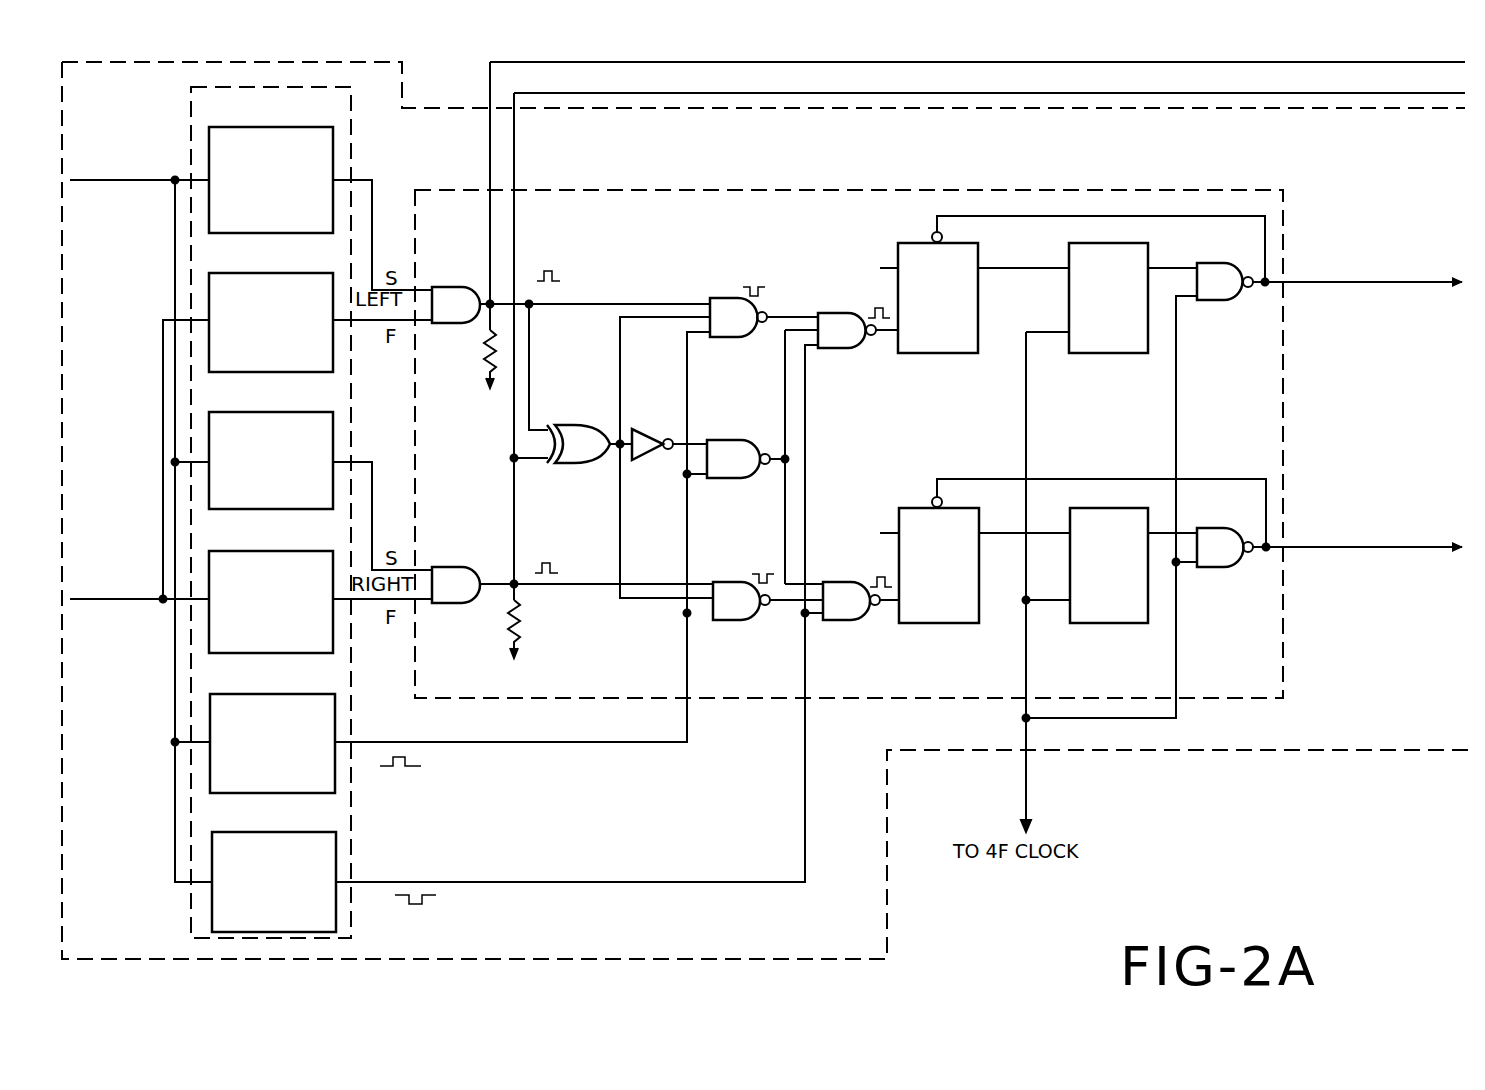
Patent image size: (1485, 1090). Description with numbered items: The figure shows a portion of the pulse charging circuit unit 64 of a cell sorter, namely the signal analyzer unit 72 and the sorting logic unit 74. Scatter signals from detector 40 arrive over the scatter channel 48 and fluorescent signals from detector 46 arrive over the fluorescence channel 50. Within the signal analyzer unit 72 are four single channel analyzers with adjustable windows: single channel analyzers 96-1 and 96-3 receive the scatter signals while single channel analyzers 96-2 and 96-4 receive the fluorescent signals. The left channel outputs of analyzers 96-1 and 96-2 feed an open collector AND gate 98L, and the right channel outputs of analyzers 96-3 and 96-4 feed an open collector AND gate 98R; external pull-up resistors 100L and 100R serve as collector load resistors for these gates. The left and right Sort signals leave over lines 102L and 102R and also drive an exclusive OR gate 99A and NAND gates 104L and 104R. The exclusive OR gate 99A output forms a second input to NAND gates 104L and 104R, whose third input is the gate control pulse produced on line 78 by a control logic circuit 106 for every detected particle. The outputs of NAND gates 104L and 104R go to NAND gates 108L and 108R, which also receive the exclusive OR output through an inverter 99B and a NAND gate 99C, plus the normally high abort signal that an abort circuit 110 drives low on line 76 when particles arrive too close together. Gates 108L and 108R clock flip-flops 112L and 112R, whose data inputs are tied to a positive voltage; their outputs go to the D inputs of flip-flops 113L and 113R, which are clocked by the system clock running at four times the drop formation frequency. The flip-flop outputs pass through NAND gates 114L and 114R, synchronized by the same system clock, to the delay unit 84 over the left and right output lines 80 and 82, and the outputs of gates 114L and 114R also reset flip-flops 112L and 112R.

The detector 40 is at (112, 130).
The detector 46 is at (118, 664).
The scatter channel 48 is at (130, 181).
The fluorescence channel 50 is at (130, 592).
The signal analyzer unit 72 is at (196, 943).
The sorting logic unit 74 is at (1045, 190).
The pulse charging circuit unit 64 is at (1325, 750).
The single channel analyzer 96-1 is at (262, 124).
The single channel analyzer 96-2 is at (265, 270).
The single channel analyzer 96-3 is at (270, 406).
The single channel analyzer 96-4 is at (268, 547).
The control logic circuit 106 is at (258, 688).
The abort circuit 110 is at (258, 830).
The AND gate 98L is at (470, 290).
The AND gate 98R is at (470, 570).
The pull-up resistor 100L is at (488, 360).
The pull-up resistor 100R is at (512, 630).
The line 102L is at (490, 135).
The line 102R is at (528, 133).
The exclusive OR gate 99A is at (586, 425).
The inverter 99B is at (672, 425).
The NAND gate 99C is at (718, 440).
The NAND gate 104L is at (712, 298).
The NAND gate 104R is at (716, 618).
The NAND gate 108L is at (840, 314).
The NAND gate 108R is at (832, 618).
The flip-flop 112L is at (950, 354).
The flip-flop 112R is at (948, 623).
The flip-flop 113L is at (1120, 354).
The flip-flop 113R is at (1112, 623).
The NAND gate 114L is at (1218, 263).
The NAND gate 114R is at (1242, 565).
The output line 76 is at (487, 860).
The line 78 is at (568, 720).
The left output line to delay unit 80 is at (1382, 284).
The right output line to delay unit 82 is at (1386, 550).
The delay unit 84 is at (1456, 550).